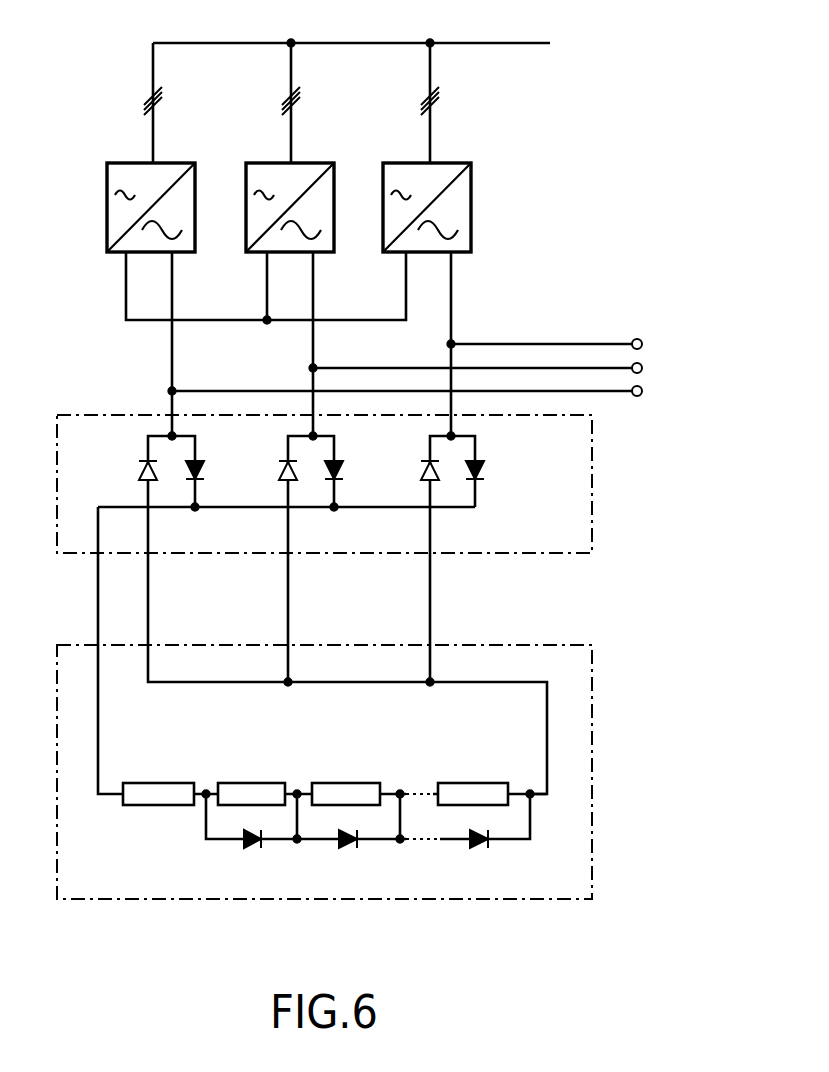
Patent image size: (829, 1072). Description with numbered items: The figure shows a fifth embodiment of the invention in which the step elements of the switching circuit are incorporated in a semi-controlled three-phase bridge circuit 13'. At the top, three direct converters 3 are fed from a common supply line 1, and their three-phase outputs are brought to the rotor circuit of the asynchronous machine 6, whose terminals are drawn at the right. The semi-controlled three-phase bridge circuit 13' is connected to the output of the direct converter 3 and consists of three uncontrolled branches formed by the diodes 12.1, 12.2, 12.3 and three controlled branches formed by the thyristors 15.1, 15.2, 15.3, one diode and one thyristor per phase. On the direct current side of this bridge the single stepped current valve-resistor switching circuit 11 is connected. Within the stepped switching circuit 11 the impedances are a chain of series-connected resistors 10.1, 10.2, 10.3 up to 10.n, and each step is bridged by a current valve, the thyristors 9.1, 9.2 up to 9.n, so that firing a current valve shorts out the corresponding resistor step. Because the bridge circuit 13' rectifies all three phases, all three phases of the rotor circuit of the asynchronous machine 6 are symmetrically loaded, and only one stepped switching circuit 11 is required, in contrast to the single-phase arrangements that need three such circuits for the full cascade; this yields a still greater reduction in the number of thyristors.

The AC supply network 1 is at (510, 43).
The direct converter 3 is at (468, 137).
The asynchronous machine 6 is at (642, 346).
The semi-controlled three-phase bridge circuit 13' is at (362, 484).
The diode 12.1 is at (139, 471).
The diode 12.2 is at (280, 470).
The diode 12.3 is at (422, 470).
The thyristor 15.1 is at (197, 463).
The thyristor 15.2 is at (337, 463).
The thyristor 15.3 is at (484, 466).
The stepped current valve-resistor switching circuit 11 is at (592, 736).
The resistor 10.1 is at (153, 782).
The resistor 10.2 is at (247, 782).
The resistor 10.3 is at (337, 782).
The resistor 10.n is at (466, 782).
The current valve 9.1 is at (251, 848).
The current valve 9.2 is at (346, 848).
The current valve 9.n is at (474, 848).